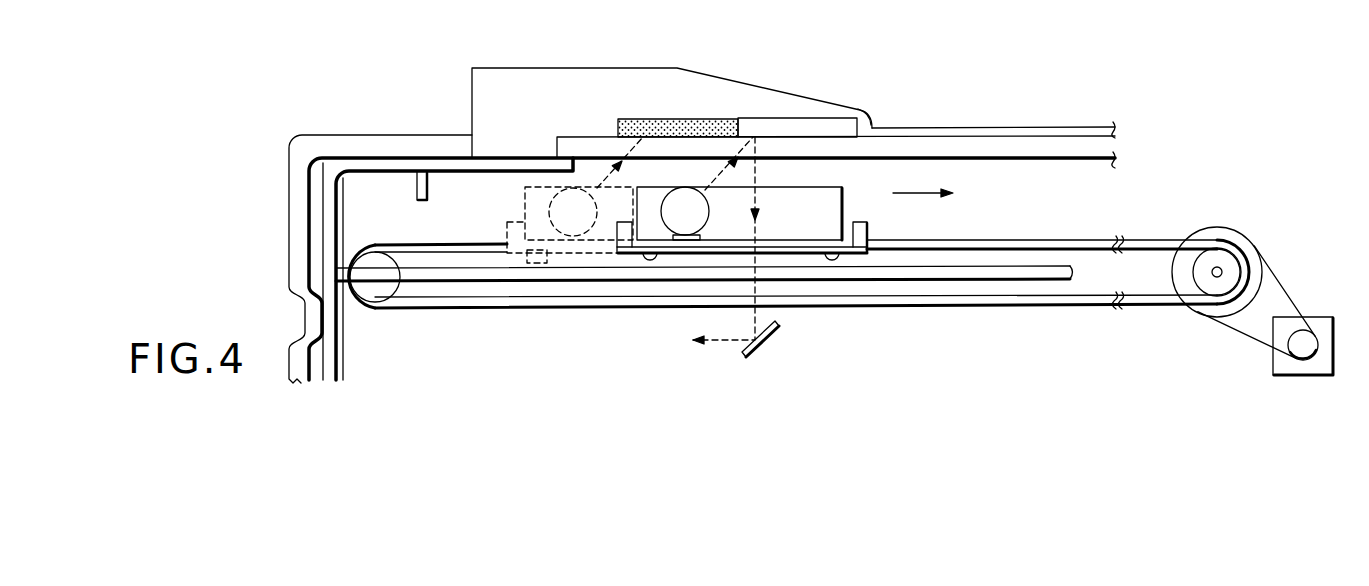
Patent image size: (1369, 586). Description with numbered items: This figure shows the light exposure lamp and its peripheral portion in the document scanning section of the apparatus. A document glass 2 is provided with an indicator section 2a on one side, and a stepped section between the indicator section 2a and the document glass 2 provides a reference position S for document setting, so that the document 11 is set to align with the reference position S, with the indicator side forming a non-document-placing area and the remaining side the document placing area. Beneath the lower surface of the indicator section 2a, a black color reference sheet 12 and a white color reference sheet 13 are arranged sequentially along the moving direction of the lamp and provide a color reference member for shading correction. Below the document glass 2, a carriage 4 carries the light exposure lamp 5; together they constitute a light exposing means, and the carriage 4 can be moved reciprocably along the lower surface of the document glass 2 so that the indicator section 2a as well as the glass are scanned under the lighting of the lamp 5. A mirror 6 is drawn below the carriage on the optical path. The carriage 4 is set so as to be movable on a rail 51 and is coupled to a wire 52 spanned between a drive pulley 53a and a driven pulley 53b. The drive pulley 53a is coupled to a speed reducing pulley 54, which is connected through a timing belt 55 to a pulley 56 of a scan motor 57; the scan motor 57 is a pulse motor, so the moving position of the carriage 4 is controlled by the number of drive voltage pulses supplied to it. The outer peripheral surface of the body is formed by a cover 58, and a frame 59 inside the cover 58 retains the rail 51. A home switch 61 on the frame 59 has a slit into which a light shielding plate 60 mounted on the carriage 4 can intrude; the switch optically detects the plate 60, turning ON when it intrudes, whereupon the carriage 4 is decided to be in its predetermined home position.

The document glass 2 is at (1080, 158).
The indicator section 2a is at (720, 75).
The carriage 4 is at (868, 229).
The light exposure lamp 5 is at (710, 212).
The mirror 6 is at (766, 341).
The document 11 is at (1020, 126).
The black color reference sheet 12 is at (655, 118).
The white color reference sheet 13 is at (798, 117).
The reference position S is at (873, 109).
The rail 51 is at (883, 282).
The wire 52 is at (442, 243).
The drive pulley 53a is at (1217, 292).
The driven pulley 53b is at (377, 296).
The speed reducing pulley 54 is at (1238, 230).
The timing belt 55 is at (1287, 280).
The pulley 56 is at (1298, 355).
The scan motor 57 is at (1325, 317).
The cover 58 is at (413, 134).
The frame 59 is at (453, 171).
The light shielding plate 60 is at (835, 187).
The home switch 61 is at (415, 176).